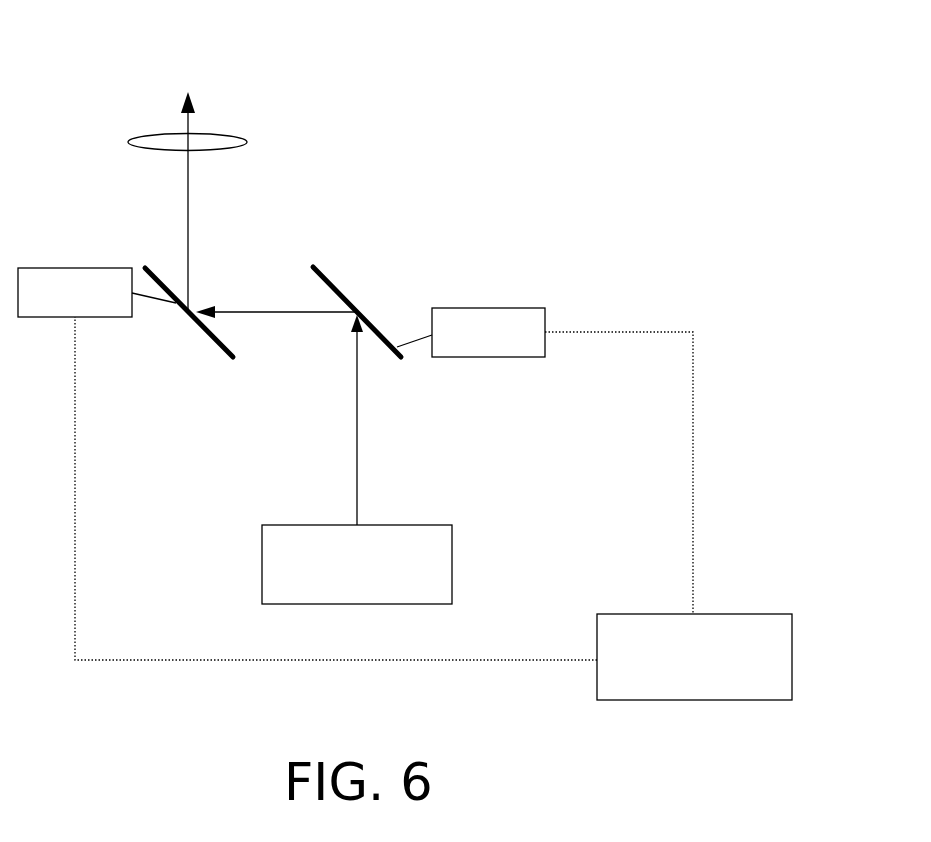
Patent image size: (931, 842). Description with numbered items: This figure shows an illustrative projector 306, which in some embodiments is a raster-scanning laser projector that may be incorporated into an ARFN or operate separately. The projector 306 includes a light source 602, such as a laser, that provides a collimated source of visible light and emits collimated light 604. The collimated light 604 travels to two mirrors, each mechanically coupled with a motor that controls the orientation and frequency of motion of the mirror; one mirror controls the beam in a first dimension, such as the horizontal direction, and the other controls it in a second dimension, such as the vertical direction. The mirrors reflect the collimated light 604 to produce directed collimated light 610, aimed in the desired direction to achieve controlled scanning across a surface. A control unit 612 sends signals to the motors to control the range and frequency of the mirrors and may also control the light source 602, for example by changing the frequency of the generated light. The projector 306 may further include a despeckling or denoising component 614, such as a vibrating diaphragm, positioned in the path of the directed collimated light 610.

The projector 306 is at (563, 64).
The light source 602 is at (357, 564).
The collimated light 604 is at (356, 460).
The directed collimated light 610 is at (185, 208).
The control unit 612 is at (433, 508).
The despeckling or denoising component 614 is at (245, 142).